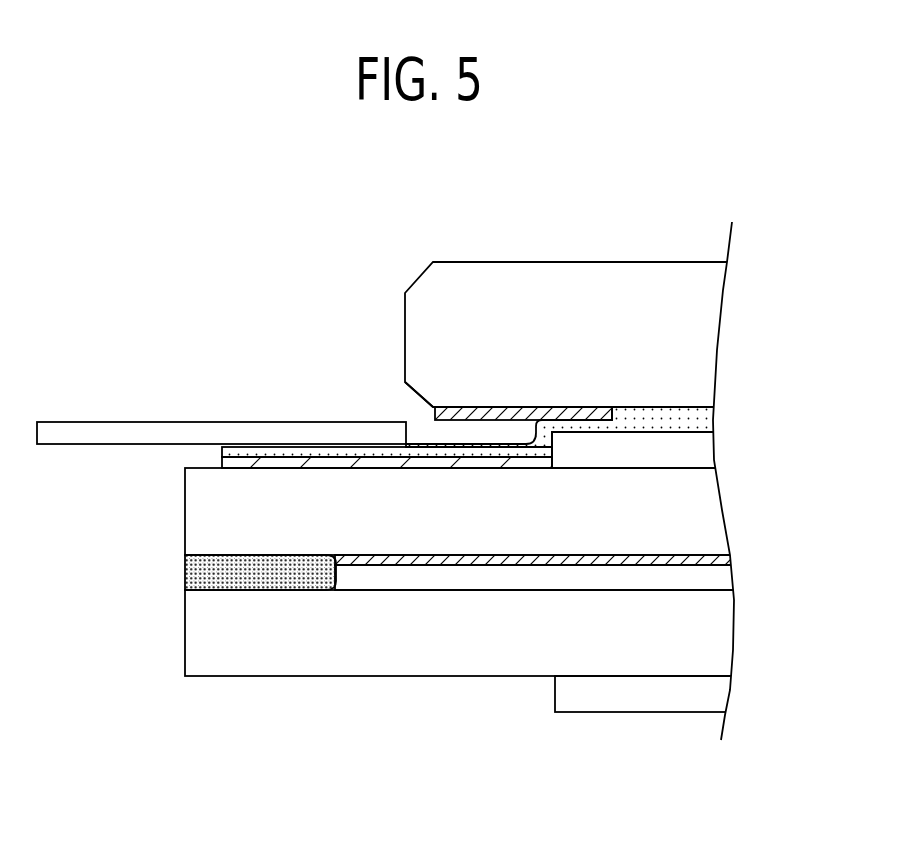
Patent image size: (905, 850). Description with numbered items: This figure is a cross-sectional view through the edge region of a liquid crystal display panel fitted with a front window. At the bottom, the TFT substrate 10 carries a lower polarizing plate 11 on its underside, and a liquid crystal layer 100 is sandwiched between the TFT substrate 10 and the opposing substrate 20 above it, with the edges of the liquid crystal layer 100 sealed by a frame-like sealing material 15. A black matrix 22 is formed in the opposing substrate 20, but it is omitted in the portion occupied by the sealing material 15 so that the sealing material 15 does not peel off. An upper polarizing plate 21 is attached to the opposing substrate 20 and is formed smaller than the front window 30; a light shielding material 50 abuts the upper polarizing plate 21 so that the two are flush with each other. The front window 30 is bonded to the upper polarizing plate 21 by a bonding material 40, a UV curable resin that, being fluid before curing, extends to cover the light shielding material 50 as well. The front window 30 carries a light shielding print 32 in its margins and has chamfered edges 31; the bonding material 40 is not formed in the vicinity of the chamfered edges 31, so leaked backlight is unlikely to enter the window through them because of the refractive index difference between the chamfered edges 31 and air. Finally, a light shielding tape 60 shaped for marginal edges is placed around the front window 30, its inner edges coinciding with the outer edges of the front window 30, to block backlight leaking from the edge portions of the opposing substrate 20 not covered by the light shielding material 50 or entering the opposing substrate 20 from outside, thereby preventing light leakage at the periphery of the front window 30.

The TFT substrate 10 is at (715, 630).
The lower polarizing plate 11 is at (718, 695).
The liquid crystal layer 100 is at (723, 578).
The sealing material 15 is at (195, 572).
The opposing substrate 20 is at (700, 505).
The upper polarizing plate 21 is at (705, 453).
The black matrix 22 is at (730, 557).
The front window 30 is at (692, 342).
The chamfered edges 31 is at (417, 397).
The light shielding print 32 is at (508, 407).
The bonding material 40 is at (705, 420).
The light shielding material 50 is at (322, 462).
The light shielding tape 60 is at (152, 432).